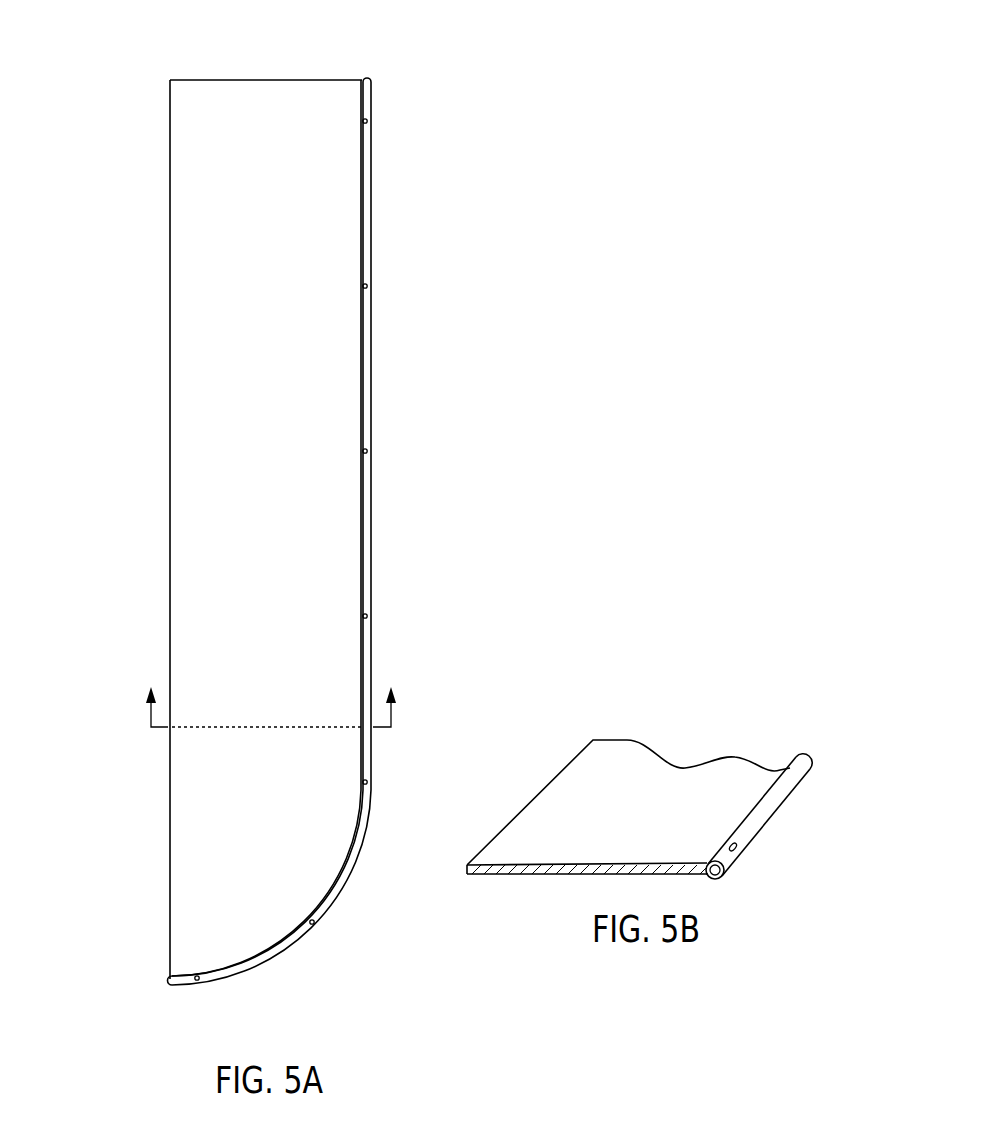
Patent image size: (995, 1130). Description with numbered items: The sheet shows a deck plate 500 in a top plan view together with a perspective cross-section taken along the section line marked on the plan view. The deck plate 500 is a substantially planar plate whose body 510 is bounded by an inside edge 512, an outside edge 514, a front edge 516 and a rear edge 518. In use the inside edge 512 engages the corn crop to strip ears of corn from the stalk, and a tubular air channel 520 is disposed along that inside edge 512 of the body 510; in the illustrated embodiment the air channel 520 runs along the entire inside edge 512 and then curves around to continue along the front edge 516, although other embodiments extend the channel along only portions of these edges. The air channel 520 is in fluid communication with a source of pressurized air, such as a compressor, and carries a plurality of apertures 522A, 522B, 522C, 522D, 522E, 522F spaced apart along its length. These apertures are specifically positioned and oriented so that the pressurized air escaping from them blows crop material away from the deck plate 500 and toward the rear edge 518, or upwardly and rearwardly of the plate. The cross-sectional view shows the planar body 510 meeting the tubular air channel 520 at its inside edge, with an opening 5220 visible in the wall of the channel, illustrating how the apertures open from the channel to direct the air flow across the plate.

In FIG. 5A, the deck plate 500 is at (140, 101).
In FIG. 5A, the body 510 is at (197, 487).
In FIG. 5A, the inside edge 512 is at (369, 347).
In FIG. 5A, the outside edge 514 is at (170, 322).
In FIG. 5A, the front edge 516 is at (233, 960).
In FIG. 5B, the front edge 516 is at (677, 780).
In FIG. 5A, the rear edge 518 is at (263, 80).
In FIG. 5A, the air channel 520 is at (366, 175).
In FIG. 5B, the air channel 520 is at (770, 807).
In FIG. 5A, the aperture 522A is at (367, 118).
In FIG. 5A, the aperture 522B is at (367, 282).
In FIG. 5A, the aperture 522C is at (367, 447).
In FIG. 5A, the aperture 522D is at (367, 612).
In FIG. 5A, the aperture 522E is at (367, 778).
In FIG. 5A, the aperture 522F is at (316, 921).
In FIG. 5B, the opening 5220 is at (739, 847).